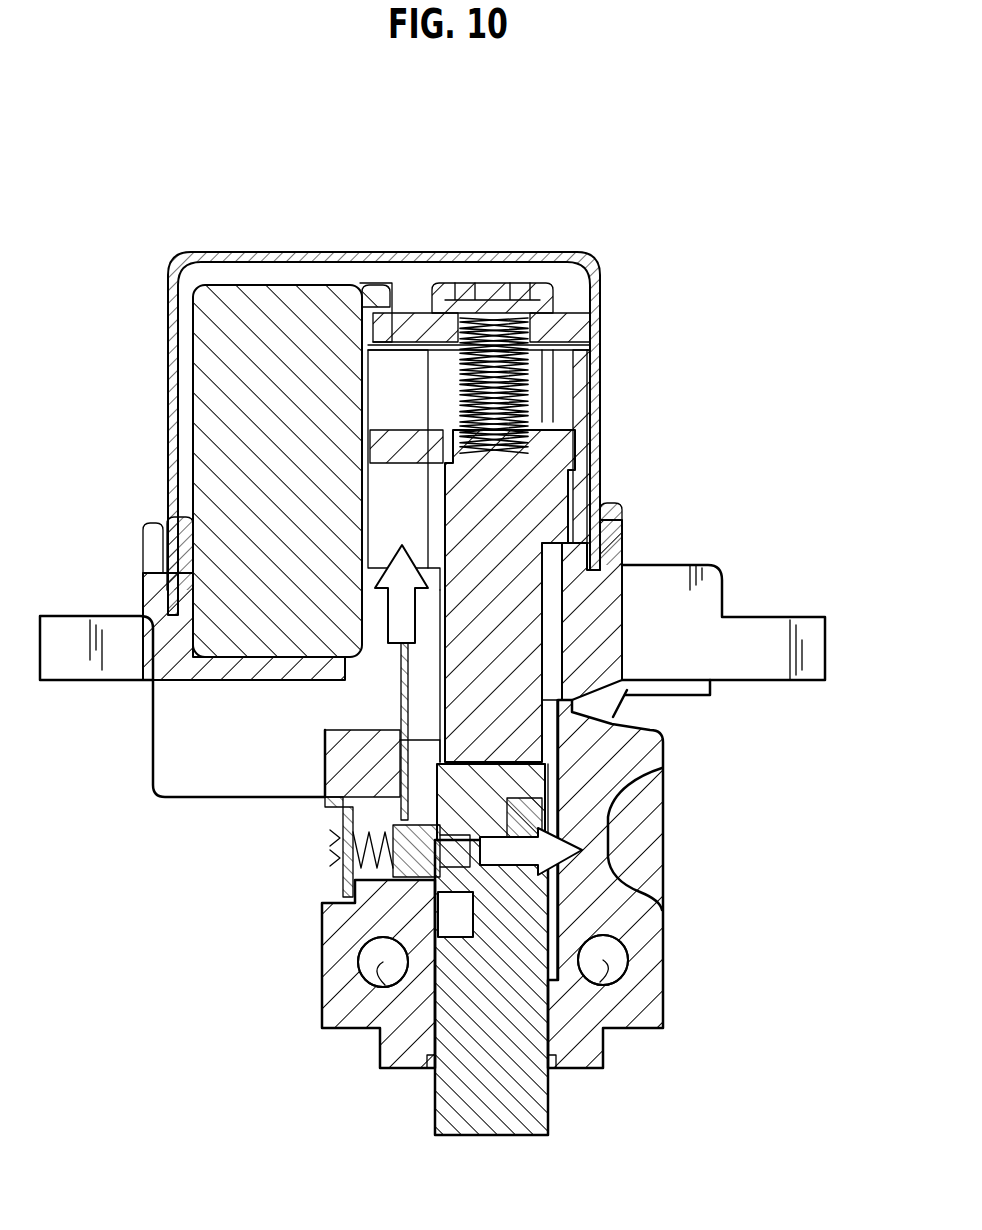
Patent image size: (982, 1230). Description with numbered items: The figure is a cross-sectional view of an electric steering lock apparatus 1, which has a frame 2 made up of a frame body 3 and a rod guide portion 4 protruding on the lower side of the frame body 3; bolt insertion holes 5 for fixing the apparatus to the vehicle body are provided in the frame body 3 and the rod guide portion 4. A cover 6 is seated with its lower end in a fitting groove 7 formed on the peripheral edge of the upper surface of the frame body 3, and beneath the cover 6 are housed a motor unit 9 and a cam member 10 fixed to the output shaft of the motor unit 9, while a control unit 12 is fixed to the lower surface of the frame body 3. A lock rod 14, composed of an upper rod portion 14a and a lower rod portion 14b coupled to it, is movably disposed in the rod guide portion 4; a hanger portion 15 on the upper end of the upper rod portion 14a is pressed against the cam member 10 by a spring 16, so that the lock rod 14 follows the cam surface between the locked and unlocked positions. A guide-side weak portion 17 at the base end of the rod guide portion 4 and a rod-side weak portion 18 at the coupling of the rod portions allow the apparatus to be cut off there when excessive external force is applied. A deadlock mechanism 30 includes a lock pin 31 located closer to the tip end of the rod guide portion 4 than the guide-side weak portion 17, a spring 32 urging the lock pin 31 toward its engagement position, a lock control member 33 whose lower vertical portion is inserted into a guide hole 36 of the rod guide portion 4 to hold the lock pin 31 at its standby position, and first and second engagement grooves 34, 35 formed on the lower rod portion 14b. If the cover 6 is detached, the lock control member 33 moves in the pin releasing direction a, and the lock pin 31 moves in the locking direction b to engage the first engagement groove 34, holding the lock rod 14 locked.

The electric steering lock apparatus 1 is at (338, 205).
The frame 2 is at (850, 688).
The frame body 3 is at (602, 633).
The rod guide portion 4 is at (640, 813).
The bolt insertion holes 5 is at (375, 966).
The cover 6 is at (167, 322).
The fitting groove 7 is at (622, 563).
The motor unit 9 is at (250, 320).
The cam member 10 is at (383, 493).
The control unit 12 is at (173, 752).
The lock rod 14 is at (758, 722).
The upper rod portion 14a is at (500, 786).
The lower rod portion 14b is at (530, 813).
The hanger portion 15 is at (431, 430).
The spring 16 is at (527, 388).
The guide-side weak portion 17 is at (385, 706).
The rod-side weak portion 18 is at (660, 771).
The deadlock mechanism 30 is at (312, 848).
The lock pin 31 is at (340, 902).
The spring 32 is at (333, 853).
The lock control member 33 is at (403, 705).
The first engagement groove 34 is at (515, 860).
The second engagement groove 35 is at (466, 913).
The guide hole 36 is at (393, 790).
The pin releasing direction a is at (355, 612).
The locking direction b is at (656, 848).